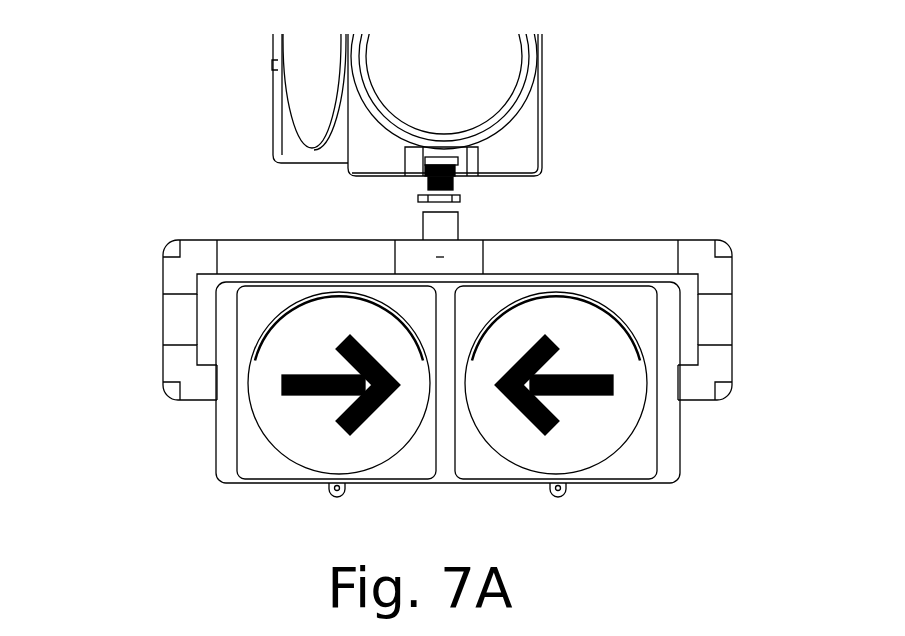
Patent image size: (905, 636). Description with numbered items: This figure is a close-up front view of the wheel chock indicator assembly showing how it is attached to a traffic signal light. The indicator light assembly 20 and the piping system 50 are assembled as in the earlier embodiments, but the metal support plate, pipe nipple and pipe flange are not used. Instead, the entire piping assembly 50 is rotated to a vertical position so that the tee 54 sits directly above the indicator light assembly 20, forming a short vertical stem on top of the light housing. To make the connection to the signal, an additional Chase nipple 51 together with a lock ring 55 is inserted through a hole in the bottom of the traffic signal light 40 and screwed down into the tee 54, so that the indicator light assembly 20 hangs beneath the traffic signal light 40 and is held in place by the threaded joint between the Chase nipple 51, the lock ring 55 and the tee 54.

The indicator light assembly 20 is at (194, 483).
The traffic signal light 40 is at (566, 93).
The piping system 50 is at (430, 343).
The Chase nipple 51 is at (433, 162).
The tee 54 is at (458, 257).
The lock ring 55 is at (460, 197).